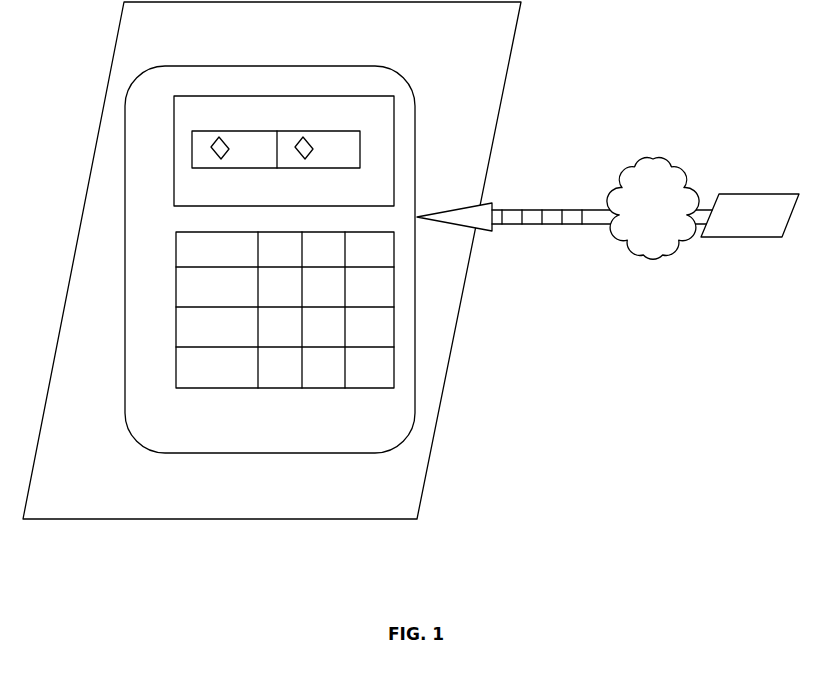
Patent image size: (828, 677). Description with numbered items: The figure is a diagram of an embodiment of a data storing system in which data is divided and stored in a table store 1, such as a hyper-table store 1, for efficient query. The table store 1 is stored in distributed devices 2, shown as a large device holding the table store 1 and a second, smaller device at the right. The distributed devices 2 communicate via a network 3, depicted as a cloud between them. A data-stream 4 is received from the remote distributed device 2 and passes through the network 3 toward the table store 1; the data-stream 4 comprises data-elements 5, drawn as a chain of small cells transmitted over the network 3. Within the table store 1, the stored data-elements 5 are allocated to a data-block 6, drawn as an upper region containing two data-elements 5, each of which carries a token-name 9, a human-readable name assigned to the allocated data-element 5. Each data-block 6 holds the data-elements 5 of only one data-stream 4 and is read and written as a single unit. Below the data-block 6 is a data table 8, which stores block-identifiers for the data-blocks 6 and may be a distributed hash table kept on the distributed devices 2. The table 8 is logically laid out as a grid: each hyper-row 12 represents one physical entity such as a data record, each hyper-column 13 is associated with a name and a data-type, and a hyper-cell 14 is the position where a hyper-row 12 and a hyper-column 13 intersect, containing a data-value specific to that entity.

The table store 1 is at (330, 66).
The distributed device 2 is at (417, 519).
The network 3 is at (641, 169).
The data-stream 4 is at (497, 225).
The data-element 5 is at (266, 140).
The data-block 6 is at (174, 120).
The data table 8 is at (176, 386).
The token-name 9 is at (229, 150).
The hyper-row 12 is at (176, 285).
The hyper-column 13 is at (330, 388).
The hyper-cell 14 is at (354, 383).